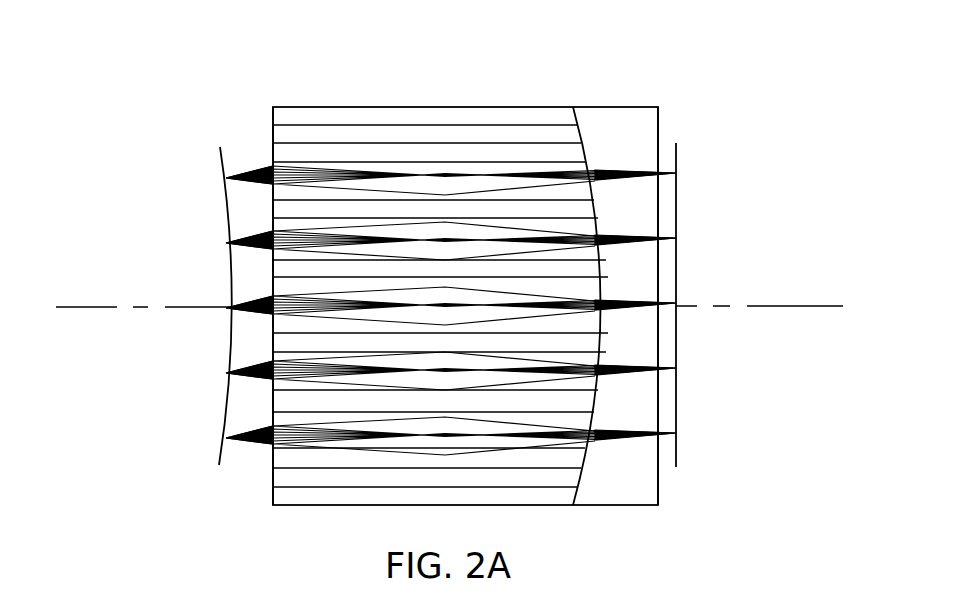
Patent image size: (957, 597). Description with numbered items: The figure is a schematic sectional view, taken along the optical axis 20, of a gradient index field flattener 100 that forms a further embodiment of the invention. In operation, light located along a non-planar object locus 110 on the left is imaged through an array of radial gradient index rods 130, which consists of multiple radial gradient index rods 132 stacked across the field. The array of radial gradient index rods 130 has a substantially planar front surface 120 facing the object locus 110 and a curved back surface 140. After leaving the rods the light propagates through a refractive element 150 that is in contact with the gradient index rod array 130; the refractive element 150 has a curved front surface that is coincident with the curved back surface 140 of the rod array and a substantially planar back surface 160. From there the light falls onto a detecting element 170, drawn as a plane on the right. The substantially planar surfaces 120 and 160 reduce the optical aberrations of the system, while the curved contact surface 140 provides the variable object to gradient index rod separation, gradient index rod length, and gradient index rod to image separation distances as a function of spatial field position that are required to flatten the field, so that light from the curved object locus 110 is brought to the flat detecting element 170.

The optical axis 20 is at (73, 306).
The gradient index field flattener 100 is at (147, 47).
The non-planar object locus 110 is at (216, 160).
The substantially planar front surface 120 is at (272, 112).
The array of radial gradient index rods 130 is at (430, 303).
The radial gradient index rod 132 is at (491, 112).
The curved back surface 140 is at (576, 108).
The refractive element 150 is at (631, 118).
The substantially planar back surface 160 is at (658, 126).
The detecting element 170 is at (676, 157).